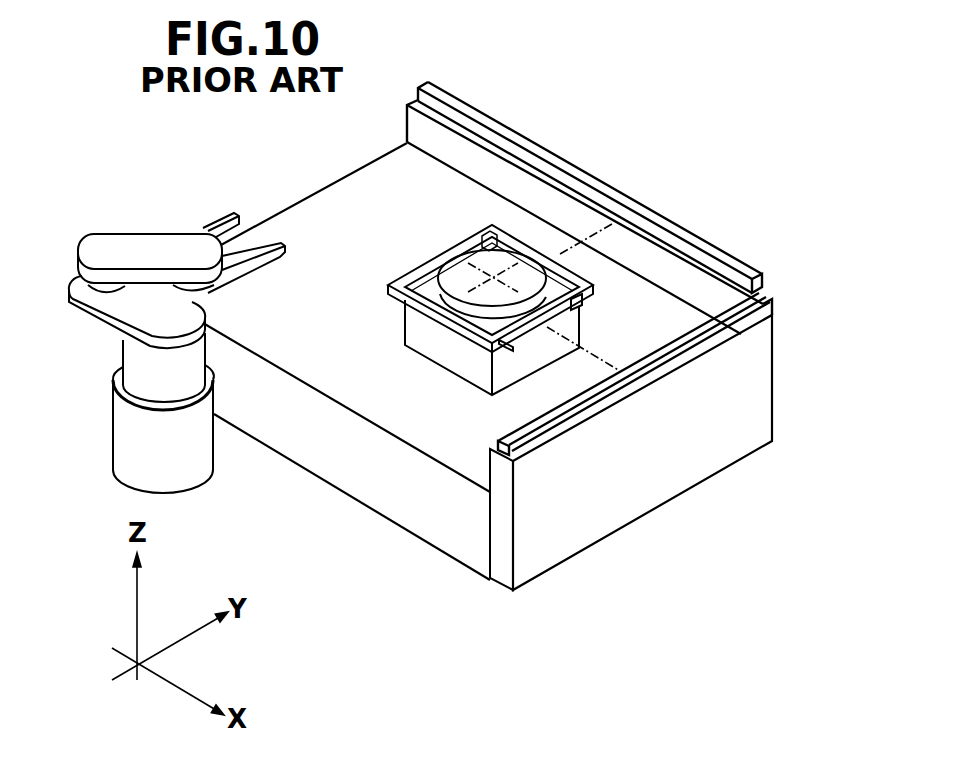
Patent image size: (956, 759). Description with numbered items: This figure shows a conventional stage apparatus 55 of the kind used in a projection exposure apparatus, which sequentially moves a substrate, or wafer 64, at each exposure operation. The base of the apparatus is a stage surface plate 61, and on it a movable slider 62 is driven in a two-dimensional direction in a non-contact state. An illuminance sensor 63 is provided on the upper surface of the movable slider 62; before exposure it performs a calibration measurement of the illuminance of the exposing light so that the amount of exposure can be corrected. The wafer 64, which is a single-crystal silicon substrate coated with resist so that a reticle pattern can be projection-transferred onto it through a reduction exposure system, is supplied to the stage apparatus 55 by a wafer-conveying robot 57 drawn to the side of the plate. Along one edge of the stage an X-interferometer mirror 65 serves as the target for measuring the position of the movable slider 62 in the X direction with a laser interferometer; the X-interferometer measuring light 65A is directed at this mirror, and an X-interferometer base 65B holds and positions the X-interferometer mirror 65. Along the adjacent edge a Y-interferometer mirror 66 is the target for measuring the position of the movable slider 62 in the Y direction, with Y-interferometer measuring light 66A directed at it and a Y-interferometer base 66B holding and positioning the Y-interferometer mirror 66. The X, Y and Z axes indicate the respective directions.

The stage apparatus 55 is at (539, 594).
The wafer-conveying robot 57 is at (132, 247).
The stage surface plate 61 is at (297, 430).
The movable slider 62 is at (443, 350).
The illuminance sensor 63 is at (479, 235).
The wafer 64 is at (490, 275).
The X-interferometer mirror 65 is at (645, 350).
The X-interferometer measuring light 65A is at (588, 352).
The X-interferometer base 65B is at (585, 510).
The Y-interferometer mirror 66 is at (653, 232).
The Y-interferometer measuring light 66A is at (606, 180).
The Y-interferometer base 66B is at (545, 203).